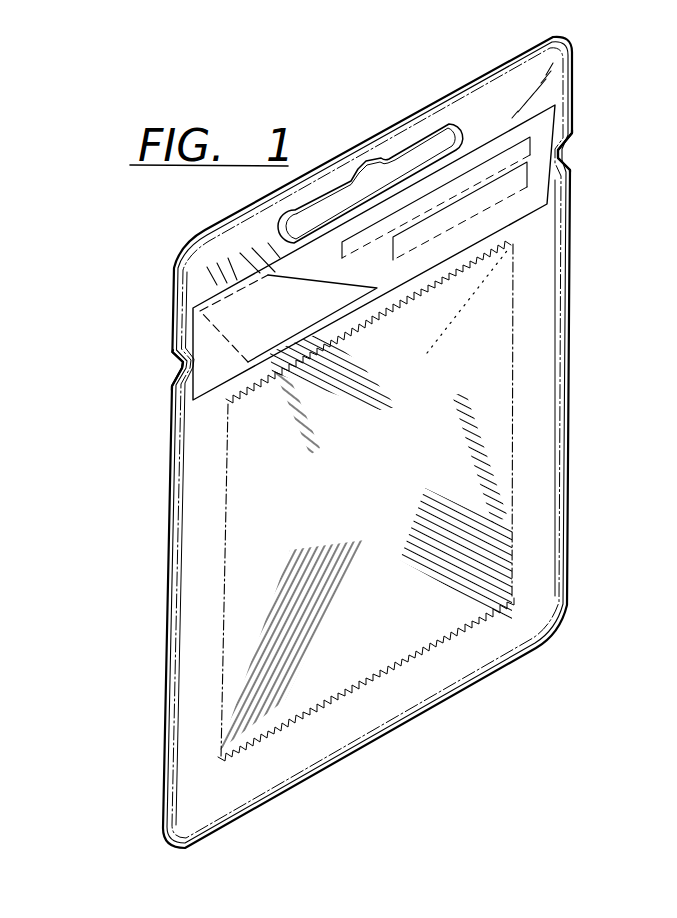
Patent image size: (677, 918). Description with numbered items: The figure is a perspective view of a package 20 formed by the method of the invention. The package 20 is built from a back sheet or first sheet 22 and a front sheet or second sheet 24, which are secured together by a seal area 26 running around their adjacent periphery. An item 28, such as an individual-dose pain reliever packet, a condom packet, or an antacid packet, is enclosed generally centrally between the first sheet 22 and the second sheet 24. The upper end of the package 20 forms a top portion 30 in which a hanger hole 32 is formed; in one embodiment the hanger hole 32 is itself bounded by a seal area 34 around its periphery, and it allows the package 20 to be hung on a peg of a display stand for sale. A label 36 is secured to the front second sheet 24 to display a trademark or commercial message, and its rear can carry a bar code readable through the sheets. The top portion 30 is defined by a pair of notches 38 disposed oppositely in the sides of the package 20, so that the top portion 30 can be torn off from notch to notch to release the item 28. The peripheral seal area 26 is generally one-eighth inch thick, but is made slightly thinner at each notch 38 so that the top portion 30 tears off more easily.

The package 20 is at (606, 321).
The first sheet 22 is at (270, 508).
The second sheet 24 is at (198, 683).
The seal area 26 is at (180, 447).
The item 28 is at (403, 433).
The top portion 30 is at (483, 110).
The hanger hole 32 is at (373, 180).
The seal area 34 is at (443, 127).
The label 36 is at (538, 192).
The notches 38 is at (176, 366).